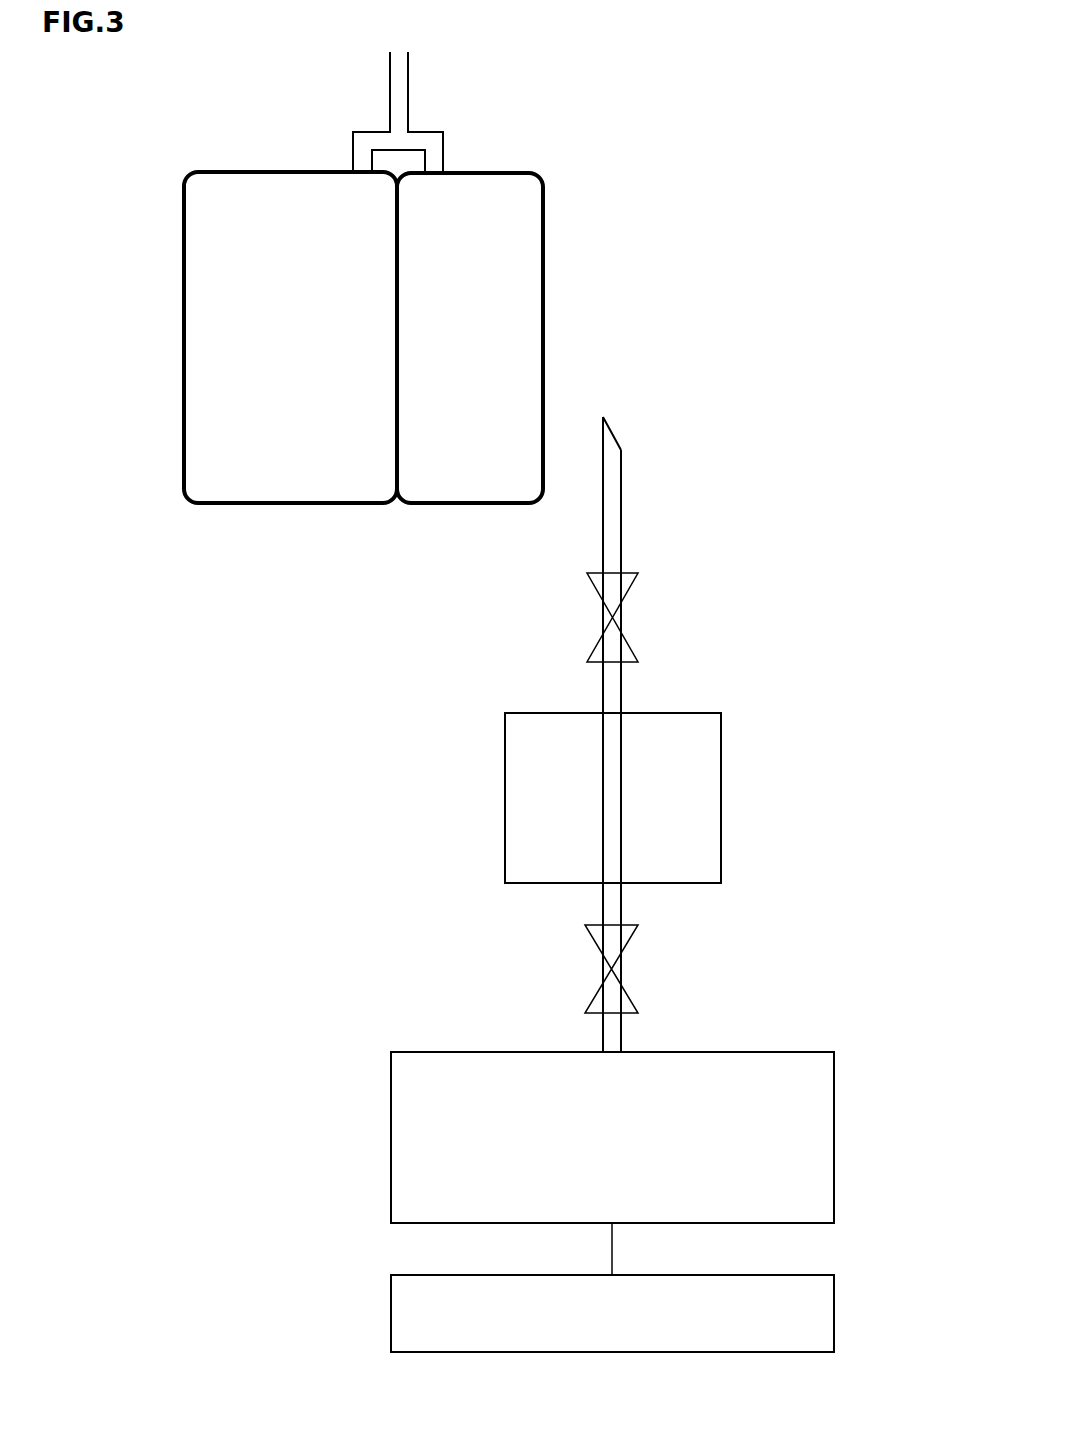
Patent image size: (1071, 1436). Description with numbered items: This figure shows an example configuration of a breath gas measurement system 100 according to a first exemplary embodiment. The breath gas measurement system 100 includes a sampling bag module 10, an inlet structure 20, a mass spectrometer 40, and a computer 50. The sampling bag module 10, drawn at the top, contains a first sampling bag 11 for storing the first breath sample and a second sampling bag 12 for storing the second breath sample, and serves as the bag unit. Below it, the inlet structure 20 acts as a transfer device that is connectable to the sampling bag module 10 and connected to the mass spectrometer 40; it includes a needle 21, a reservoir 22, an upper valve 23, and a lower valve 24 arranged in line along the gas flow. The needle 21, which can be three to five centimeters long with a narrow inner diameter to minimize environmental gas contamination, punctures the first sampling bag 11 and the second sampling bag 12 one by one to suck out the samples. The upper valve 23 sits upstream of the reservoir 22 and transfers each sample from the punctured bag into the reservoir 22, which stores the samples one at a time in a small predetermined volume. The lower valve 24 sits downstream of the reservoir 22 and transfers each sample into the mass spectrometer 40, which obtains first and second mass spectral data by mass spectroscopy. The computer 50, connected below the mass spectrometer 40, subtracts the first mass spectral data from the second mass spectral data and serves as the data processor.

The breath gas measurement system 100 is at (735, 70).
The sampling bag module 10 is at (490, 140).
The first sampling bag 11 is at (550, 228).
The second sampling bag 12 is at (183, 228).
The inlet structure 20 is at (708, 445).
The needle 21 is at (623, 510).
The reservoir 22 is at (722, 793).
The upper valve 23 is at (636, 588).
The lower valve 24 is at (636, 935).
The mass spectrometer 40 is at (836, 1130).
The computer 50 is at (836, 1318).